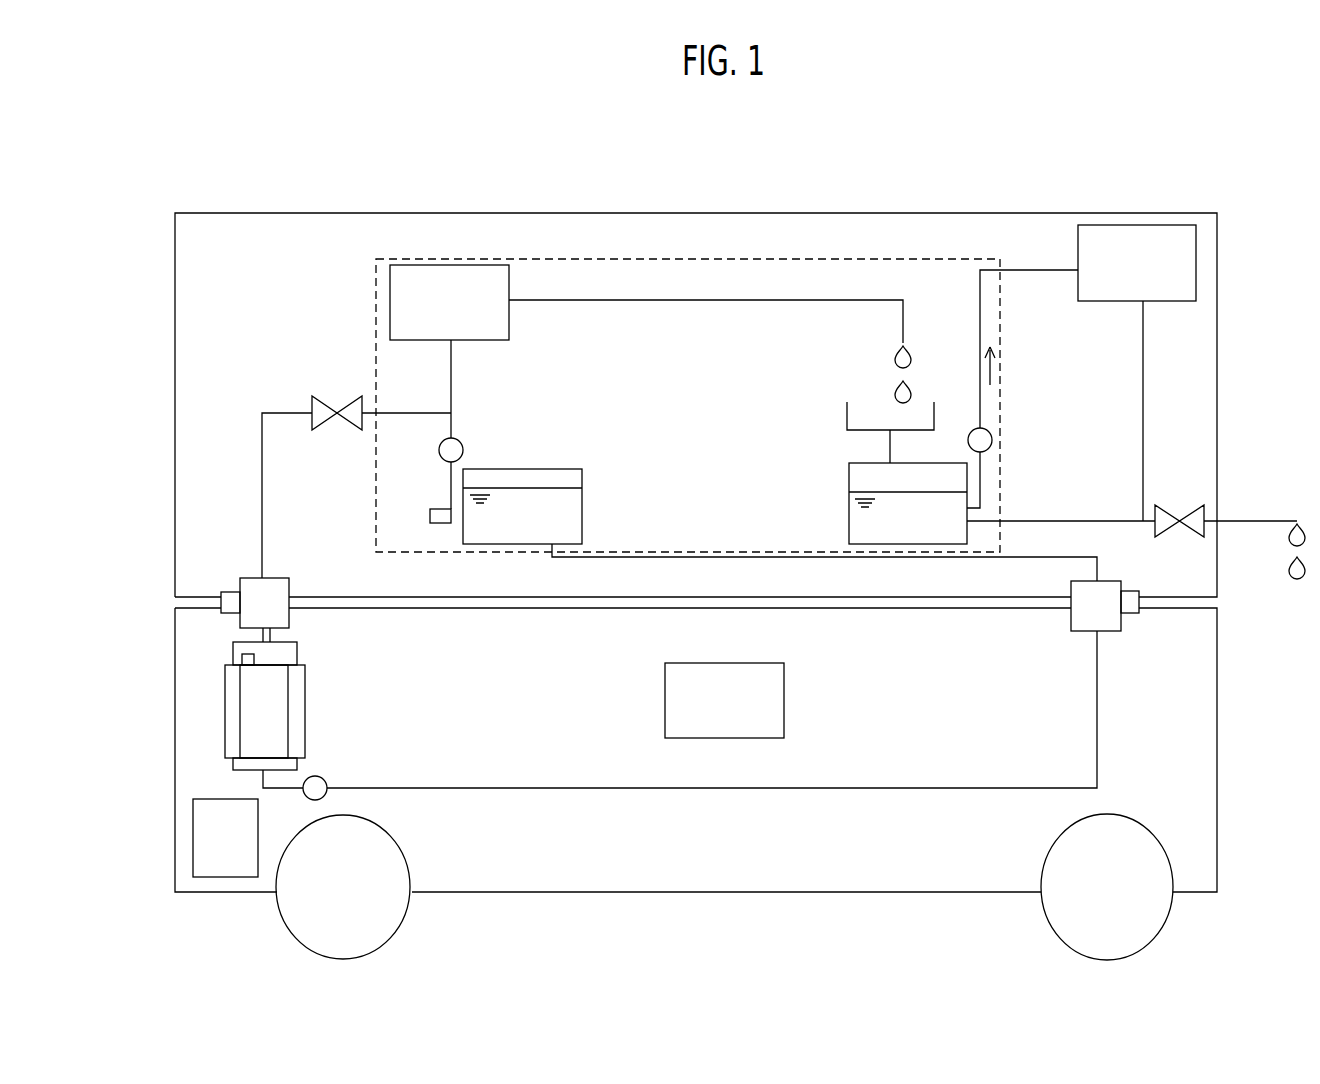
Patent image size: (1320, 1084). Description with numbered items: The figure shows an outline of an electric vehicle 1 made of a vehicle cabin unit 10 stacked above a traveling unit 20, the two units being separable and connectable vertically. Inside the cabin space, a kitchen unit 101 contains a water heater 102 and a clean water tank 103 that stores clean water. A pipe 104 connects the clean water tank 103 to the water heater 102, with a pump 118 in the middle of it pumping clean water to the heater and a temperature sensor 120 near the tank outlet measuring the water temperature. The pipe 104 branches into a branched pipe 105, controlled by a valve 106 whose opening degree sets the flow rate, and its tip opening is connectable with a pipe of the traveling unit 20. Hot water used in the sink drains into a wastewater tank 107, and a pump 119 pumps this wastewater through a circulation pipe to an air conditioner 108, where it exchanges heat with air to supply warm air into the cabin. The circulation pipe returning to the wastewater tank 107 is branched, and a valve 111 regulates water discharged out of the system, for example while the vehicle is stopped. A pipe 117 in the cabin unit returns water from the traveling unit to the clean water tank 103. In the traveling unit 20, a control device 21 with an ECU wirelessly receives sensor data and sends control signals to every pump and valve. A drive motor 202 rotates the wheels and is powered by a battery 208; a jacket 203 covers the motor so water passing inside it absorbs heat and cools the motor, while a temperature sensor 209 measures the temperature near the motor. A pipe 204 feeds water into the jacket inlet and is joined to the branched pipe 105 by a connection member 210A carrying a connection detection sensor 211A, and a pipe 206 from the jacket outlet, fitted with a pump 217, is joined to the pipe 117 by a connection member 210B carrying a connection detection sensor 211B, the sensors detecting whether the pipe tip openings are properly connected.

The vehicle 1 is at (1228, 183).
The vehicle cabin unit 10 is at (1217, 219).
The traveling unit 20 is at (1217, 866).
The control device 21 is at (223, 878).
The kitchen unit 101 is at (660, 258).
The water heater 102 is at (510, 290).
The clean water tank 103 is at (582, 500).
The pipe 104 is at (449, 348).
The branched pipe 105 is at (262, 465).
The valve 106 is at (322, 396).
The wastewater tank 107 is at (849, 510).
The air conditioner 108 is at (1078, 250).
The valve 111 is at (1158, 505).
The pipe 117 is at (995, 560).
The pump 118 is at (463, 450).
The pump 119 is at (977, 428).
The temperature sensor 120 is at (430, 517).
The drive motor 202 is at (278, 690).
The jacket 203 is at (298, 716).
The pipe 204 is at (272, 637).
The pipe 206 is at (460, 787).
The battery 208 is at (665, 700).
The temperature sensor 209 is at (233, 657).
The connection member 210A is at (277, 578).
The connection member 210B is at (1097, 632).
The connection detection sensor 211A is at (228, 592).
The connection detection sensor 211B is at (1131, 616).
The pump 217 is at (328, 786).